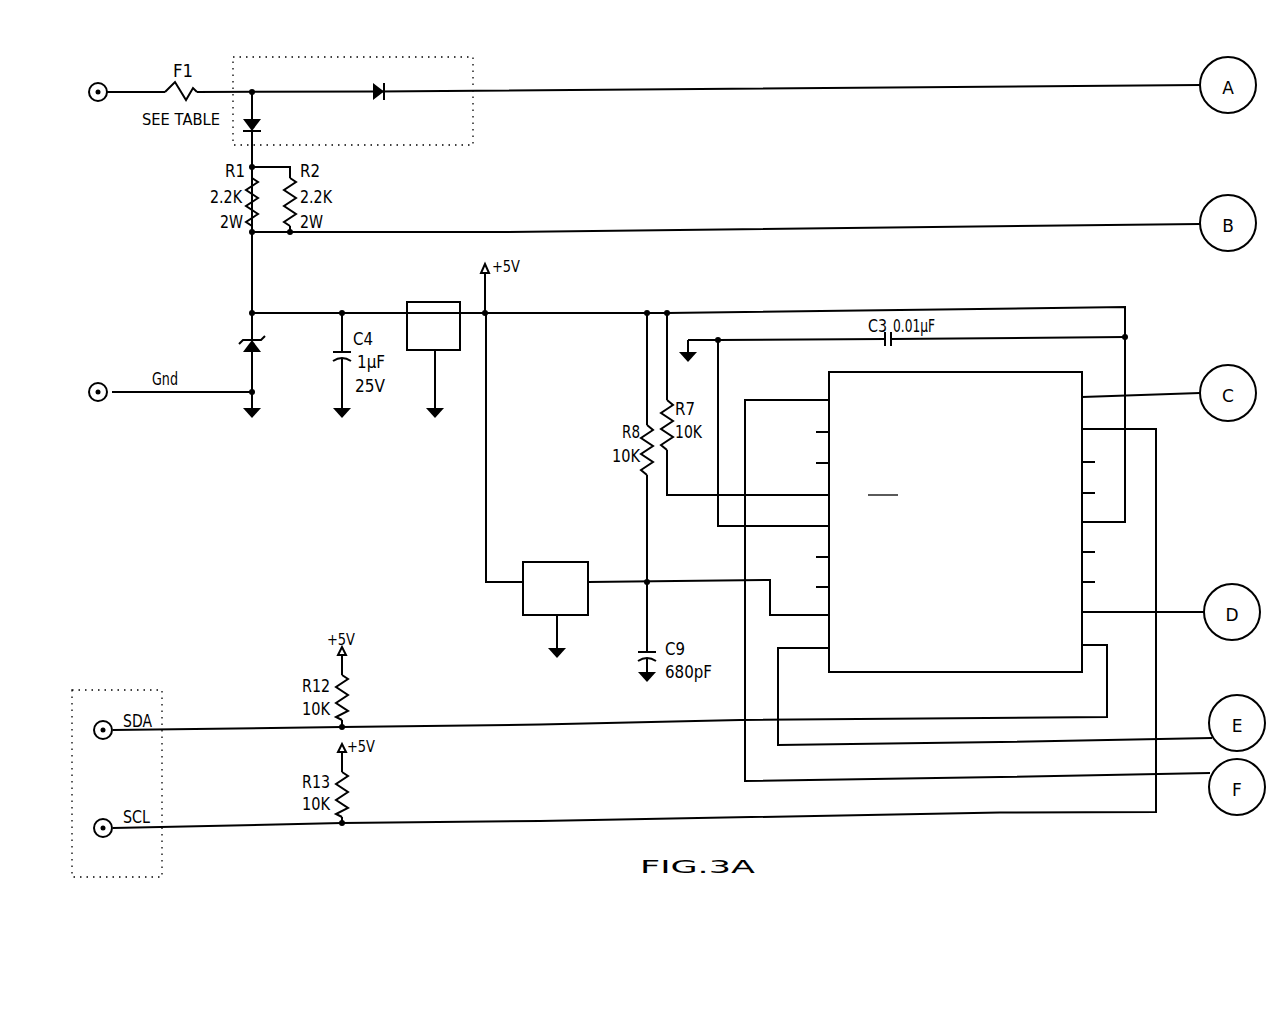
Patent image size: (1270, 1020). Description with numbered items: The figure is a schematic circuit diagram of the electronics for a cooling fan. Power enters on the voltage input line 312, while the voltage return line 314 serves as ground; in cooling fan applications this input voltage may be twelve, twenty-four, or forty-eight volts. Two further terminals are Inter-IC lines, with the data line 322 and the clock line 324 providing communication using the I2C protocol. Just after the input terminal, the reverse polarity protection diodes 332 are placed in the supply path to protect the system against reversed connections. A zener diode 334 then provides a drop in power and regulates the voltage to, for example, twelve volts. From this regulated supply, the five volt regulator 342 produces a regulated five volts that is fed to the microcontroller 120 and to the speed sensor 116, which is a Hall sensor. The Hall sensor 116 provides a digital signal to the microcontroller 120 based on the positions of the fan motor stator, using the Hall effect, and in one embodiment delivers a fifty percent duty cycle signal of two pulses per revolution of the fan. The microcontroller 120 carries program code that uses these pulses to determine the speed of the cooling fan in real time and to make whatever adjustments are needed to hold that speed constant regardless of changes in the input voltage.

The line E1 312 is at (100, 100).
The line E2 314 is at (100, 399).
The data line 322 is at (117, 783).
The clock line 324 is at (105, 836).
The diodes D1 and D2 332 is at (353, 101).
The zener diode D5 334 is at (255, 361).
The 5V regulator 342 is at (413, 313).
The speed sensor 116 is at (570, 569).
The microcontroller 120 is at (956, 527).